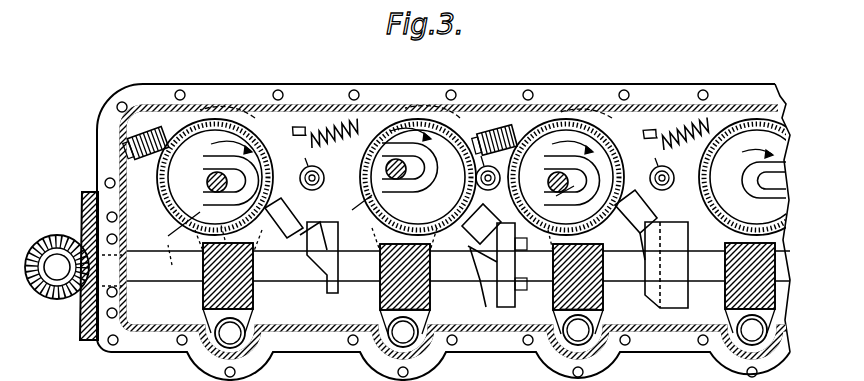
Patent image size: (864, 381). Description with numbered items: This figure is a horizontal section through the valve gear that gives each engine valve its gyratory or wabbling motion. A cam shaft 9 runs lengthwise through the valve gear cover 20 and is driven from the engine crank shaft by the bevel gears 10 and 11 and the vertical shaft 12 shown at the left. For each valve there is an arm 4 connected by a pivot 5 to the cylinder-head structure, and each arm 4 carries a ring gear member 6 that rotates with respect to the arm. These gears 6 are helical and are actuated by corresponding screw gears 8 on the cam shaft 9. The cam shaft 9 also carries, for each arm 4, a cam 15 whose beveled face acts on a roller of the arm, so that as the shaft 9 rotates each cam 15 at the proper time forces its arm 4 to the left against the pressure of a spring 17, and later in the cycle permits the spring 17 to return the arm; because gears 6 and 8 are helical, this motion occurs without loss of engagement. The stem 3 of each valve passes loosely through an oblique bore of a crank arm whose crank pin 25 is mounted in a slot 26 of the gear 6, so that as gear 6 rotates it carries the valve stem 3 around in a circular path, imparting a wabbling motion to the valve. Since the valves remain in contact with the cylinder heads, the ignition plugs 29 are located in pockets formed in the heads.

The valve stem 3 is at (207, 180).
The arm 4 is at (247, 322).
The pivot 5 is at (232, 335).
The ring gear member 6 is at (244, 158).
The screw gear 8 is at (256, 290).
The cam shaft 9 is at (366, 268).
The bevel gear 10 is at (88, 212).
The bevel gear 11 is at (50, 238).
The vertical shaft 12 is at (55, 272).
The cam 15 is at (665, 360).
The spring 17 is at (147, 132).
The valve gear cover 20 is at (576, 106).
The crank pin 25 is at (358, 225).
The slot 26 is at (250, 181).
The ignition plug 29 is at (315, 190).